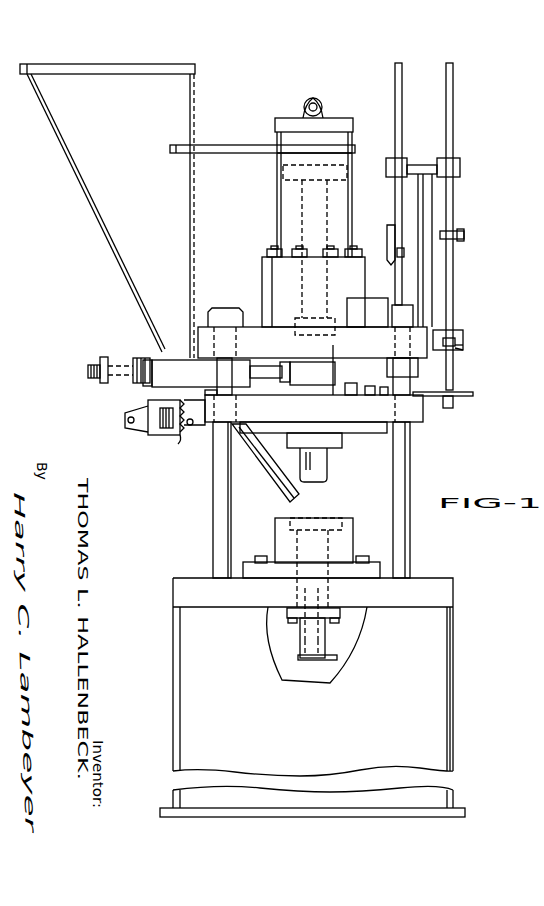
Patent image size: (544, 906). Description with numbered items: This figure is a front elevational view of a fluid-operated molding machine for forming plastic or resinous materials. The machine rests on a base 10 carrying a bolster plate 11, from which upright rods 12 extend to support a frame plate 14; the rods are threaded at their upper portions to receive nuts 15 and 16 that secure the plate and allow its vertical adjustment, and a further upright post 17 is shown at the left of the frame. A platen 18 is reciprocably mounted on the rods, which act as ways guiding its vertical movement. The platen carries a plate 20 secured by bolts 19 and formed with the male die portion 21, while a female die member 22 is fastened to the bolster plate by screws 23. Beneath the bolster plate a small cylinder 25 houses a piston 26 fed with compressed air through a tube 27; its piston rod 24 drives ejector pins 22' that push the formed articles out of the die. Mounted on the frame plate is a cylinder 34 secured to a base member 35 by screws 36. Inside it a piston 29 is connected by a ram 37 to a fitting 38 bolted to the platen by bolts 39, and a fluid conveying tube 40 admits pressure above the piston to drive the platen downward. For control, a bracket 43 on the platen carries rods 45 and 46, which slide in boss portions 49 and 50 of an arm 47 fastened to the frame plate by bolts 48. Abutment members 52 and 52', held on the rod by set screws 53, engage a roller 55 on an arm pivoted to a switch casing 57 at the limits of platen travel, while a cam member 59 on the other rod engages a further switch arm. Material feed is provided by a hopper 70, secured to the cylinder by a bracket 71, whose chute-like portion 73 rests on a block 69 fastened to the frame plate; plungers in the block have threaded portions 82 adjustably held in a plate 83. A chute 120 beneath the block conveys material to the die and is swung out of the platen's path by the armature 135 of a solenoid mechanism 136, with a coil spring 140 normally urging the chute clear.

The base 10 is at (455, 636).
The bolster plate 11 is at (445, 586).
The upright rods 12 is at (410, 465).
The frame plate 14 is at (252, 327).
The nut 15 is at (418, 370).
The nut 16 is at (388, 312).
The left upright post 17 is at (222, 470).
The platen 18 is at (423, 420).
The bolts 19 is at (290, 388).
The plate 20 is at (348, 433).
The male die portion 21 is at (327, 470).
The die member 22 is at (328, 562).
The ejector pins 22' is at (272, 607).
The screws 23 is at (340, 520).
The piston rod 24 is at (300, 628).
The small cylinder 25 is at (300, 645).
The piston 26 is at (325, 645).
The tube 27 is at (337, 660).
The piston 29 is at (283, 172).
The cylinder 34 is at (277, 195).
The base member 35 is at (266, 262).
The screws 36 is at (298, 248).
The piston rod 37 is at (327, 204).
The fitting 38 is at (335, 366).
The bolts 39 is at (345, 390).
The fluid conveying tube 40 is at (325, 103).
The bracket 43 is at (473, 394).
The rod 45 is at (401, 110).
The rod 46 is at (453, 112).
The arm 47 is at (432, 259).
The bolts 48 is at (450, 332).
The boss portion 49 is at (388, 163).
The boss portion 50 is at (460, 166).
The abutment member 52 is at (462, 225).
The abutment member 52' is at (487, 358).
The set screws 53 is at (464, 236).
The roller 55 is at (463, 345).
The switch casing 57 is at (455, 342).
The cam member 59 is at (388, 262).
The block 69 is at (152, 383).
The hopper 70 is at (82, 196).
The bracket 71 is at (230, 146).
The chute-like portion 73 is at (160, 358).
The threaded portions 82 is at (140, 362).
The plate 83 is at (114, 382).
The chute 120 is at (292, 490).
The armature 135 is at (191, 428).
The solenoid mechanism 136 is at (163, 428).
The coil spring 140 is at (180, 444).